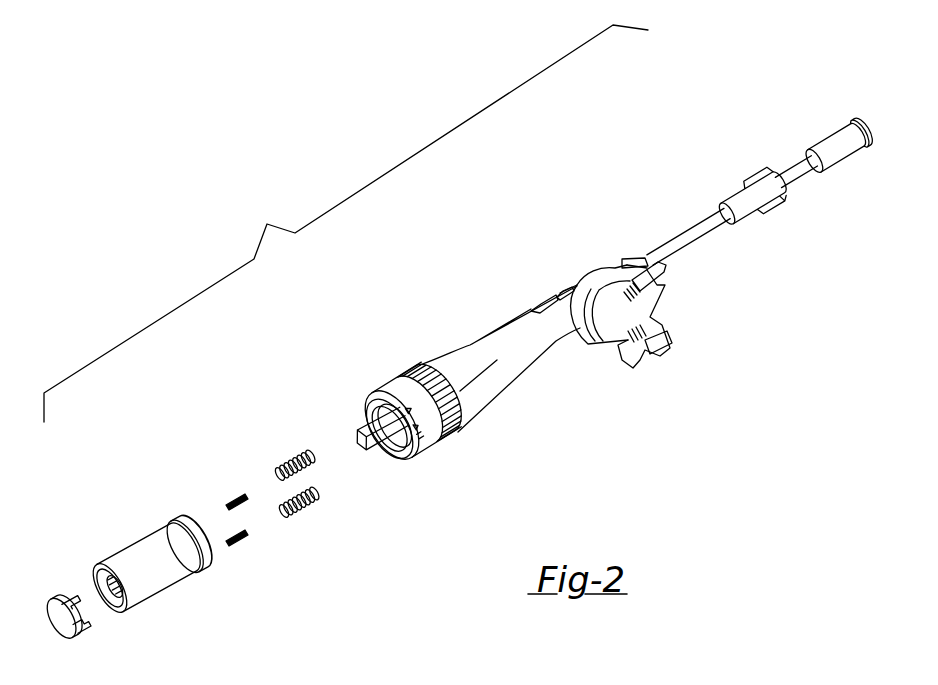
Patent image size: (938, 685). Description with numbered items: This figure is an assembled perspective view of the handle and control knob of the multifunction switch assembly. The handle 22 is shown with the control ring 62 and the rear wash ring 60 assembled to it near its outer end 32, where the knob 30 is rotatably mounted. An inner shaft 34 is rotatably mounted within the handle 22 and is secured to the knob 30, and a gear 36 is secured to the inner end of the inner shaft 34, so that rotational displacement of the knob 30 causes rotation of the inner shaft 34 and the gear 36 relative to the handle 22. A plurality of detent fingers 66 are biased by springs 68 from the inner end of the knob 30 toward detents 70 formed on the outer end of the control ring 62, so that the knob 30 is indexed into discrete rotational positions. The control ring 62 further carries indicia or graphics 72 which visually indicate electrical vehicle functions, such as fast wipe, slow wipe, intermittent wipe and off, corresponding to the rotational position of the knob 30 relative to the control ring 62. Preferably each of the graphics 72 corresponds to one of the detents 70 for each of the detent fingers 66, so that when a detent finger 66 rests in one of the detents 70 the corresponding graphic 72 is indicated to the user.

The knob 30 is at (128, 548).
The springs 68 is at (232, 538).
The detent fingers 66 is at (287, 497).
The detents 70 is at (374, 413).
The control ring 62 is at (375, 389).
The rear wash ring 60 is at (404, 375).
The indicia or graphics 72 is at (410, 409).
The outer end 32 is at (493, 395).
The handle 22 is at (546, 347).
The inner shaft 34 is at (689, 238).
The gear 36 is at (758, 177).